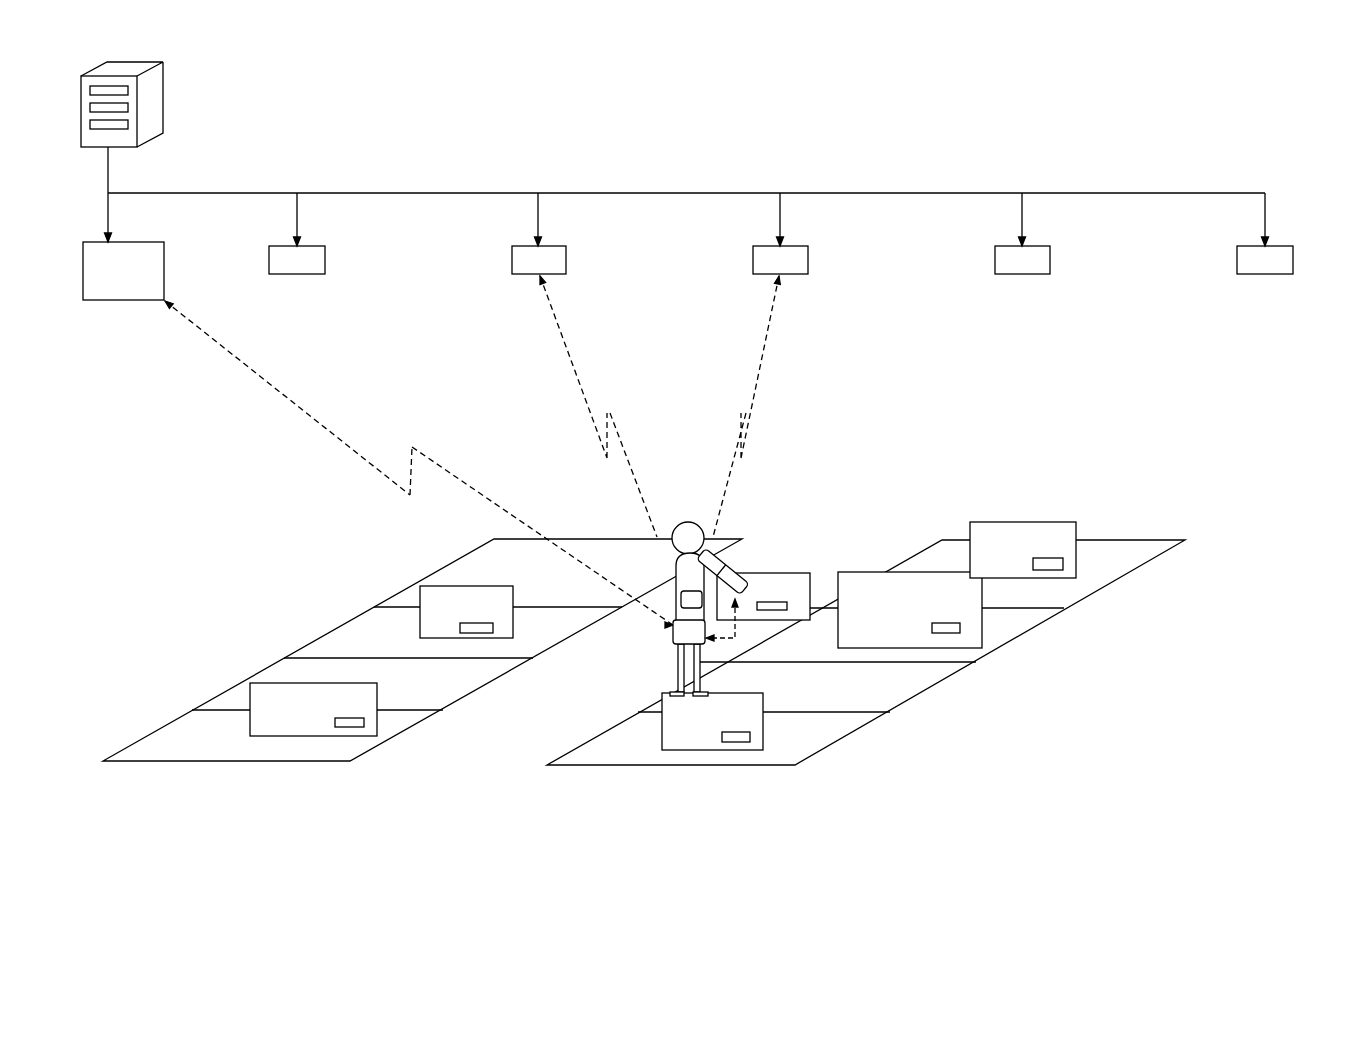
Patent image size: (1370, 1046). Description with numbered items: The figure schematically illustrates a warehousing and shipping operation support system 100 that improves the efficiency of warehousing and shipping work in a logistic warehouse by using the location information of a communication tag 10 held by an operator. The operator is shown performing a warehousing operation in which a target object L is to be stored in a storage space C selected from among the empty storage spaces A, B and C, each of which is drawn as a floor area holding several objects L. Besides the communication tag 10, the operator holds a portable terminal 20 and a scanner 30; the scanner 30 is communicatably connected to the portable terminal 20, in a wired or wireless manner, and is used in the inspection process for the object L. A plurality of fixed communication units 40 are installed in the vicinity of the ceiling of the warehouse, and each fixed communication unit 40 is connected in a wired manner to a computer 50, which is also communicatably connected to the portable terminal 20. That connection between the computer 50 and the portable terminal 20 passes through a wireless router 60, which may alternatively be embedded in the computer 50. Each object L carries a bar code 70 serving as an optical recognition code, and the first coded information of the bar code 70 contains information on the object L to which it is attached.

The support system 100 is at (1011, 117).
The communication tag 10 is at (678, 606).
The portable terminal 20 is at (673, 640).
The scanner 30 is at (722, 575).
The fixed communication unit 40 is at (325, 273).
The computer 50 is at (163, 105).
The wireless router 60 is at (113, 300).
The bar code 70 is at (691, 663).
The object L is at (513, 627).
The storage space A is at (438, 682).
The storage space B is at (485, 563).
The storage space C is at (880, 683).